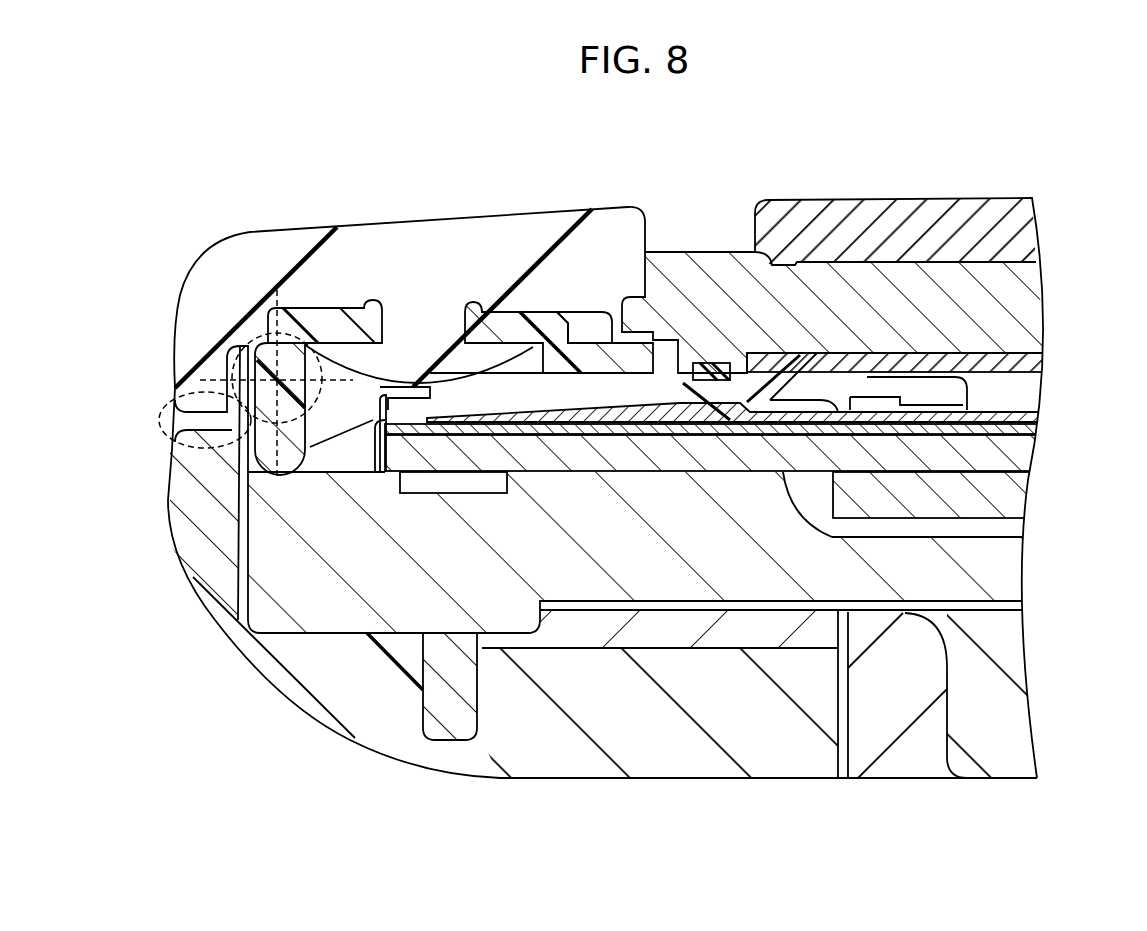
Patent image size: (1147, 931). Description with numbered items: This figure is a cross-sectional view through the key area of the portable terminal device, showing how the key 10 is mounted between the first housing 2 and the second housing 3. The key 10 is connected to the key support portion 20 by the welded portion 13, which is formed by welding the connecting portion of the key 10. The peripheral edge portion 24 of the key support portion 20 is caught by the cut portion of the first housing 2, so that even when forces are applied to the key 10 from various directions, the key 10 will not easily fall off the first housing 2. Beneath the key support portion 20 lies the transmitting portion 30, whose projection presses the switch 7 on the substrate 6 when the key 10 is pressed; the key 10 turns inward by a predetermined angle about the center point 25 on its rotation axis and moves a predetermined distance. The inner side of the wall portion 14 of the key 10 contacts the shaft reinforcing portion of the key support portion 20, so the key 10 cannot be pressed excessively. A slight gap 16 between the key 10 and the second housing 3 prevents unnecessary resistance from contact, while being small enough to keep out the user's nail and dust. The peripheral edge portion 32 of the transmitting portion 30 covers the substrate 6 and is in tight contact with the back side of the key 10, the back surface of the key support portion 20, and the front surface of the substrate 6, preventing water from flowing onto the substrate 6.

The first housing 2 is at (972, 230).
The second housing 3 is at (360, 723).
The substrate 6 is at (1028, 452).
The switch 7 is at (1036, 426).
The key 10 is at (400, 253).
The welded portion 13 is at (530, 320).
The wall portion 14 is at (190, 322).
The gap 16 is at (158, 420).
The key support portion 20 is at (313, 308).
The peripheral edge portion 24 is at (628, 357).
The center point 25 is at (262, 300).
The transmitting portion 30 is at (688, 377).
The peripheral edge portion 32 is at (425, 385).